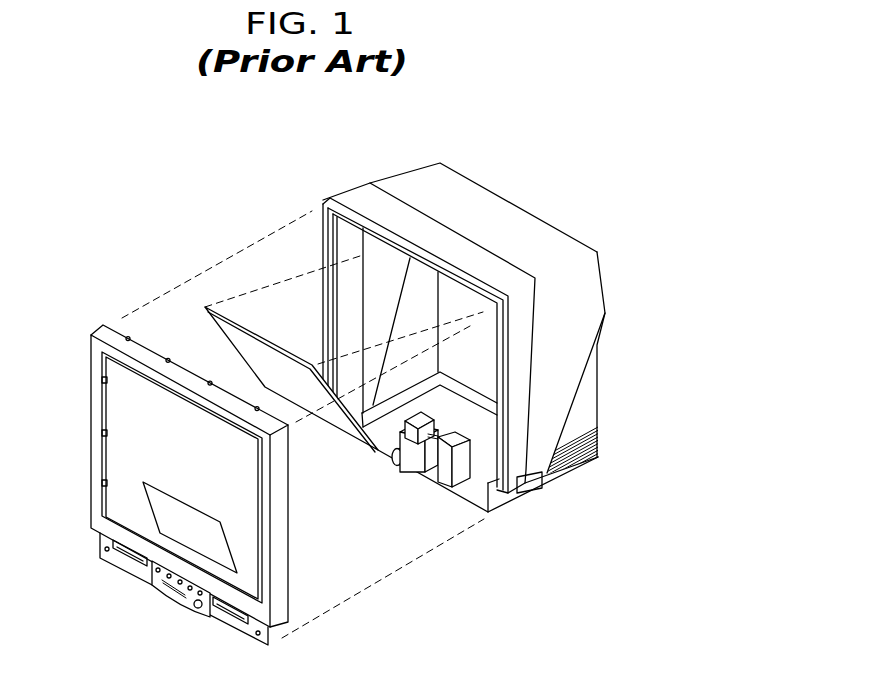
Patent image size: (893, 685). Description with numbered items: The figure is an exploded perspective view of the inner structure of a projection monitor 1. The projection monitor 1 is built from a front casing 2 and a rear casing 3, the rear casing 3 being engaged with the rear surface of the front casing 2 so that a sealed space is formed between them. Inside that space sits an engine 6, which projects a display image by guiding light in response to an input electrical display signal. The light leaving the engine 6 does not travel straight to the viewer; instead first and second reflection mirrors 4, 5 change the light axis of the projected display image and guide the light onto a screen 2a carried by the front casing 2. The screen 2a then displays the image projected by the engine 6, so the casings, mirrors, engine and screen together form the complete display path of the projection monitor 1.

The projection monitor 1 is at (314, 386).
The front casing 2 is at (156, 485).
The screen 2a is at (125, 457).
The rear casing 3 is at (415, 180).
The first reflection mirror 4 is at (192, 538).
The second reflection mirror 5 is at (240, 344).
The engine 6 is at (413, 478).